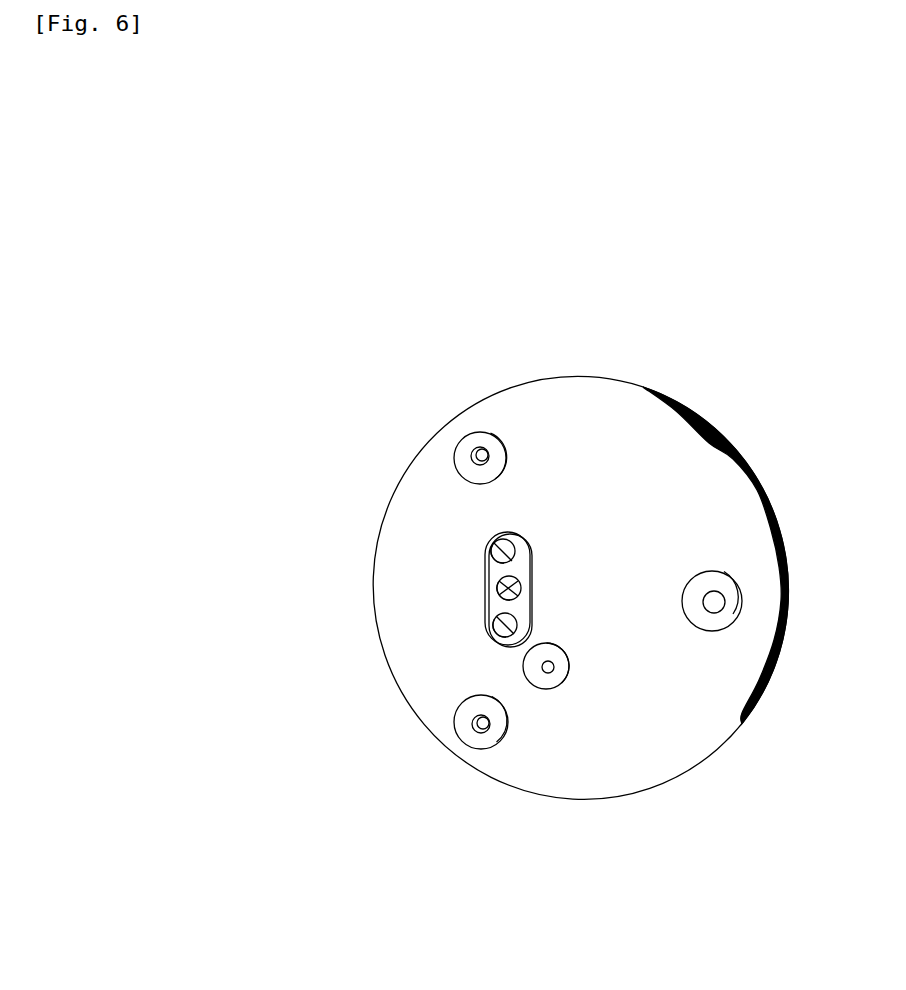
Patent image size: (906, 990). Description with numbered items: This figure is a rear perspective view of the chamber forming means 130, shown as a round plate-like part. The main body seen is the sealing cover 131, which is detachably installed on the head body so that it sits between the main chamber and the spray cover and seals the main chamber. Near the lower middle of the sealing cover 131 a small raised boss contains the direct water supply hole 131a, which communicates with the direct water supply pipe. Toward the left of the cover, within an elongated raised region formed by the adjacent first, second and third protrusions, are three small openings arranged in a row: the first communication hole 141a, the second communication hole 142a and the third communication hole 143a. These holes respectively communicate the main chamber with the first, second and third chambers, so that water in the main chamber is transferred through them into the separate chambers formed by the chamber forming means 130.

The chamber forming means 130 is at (500, 531).
The sealing cover 131 is at (643, 390).
The direct water supply hole 131a is at (548, 673).
The first communication hole 141a is at (487, 553).
The second communication hole 142a is at (487, 593).
The third communication hole 143a is at (483, 638).